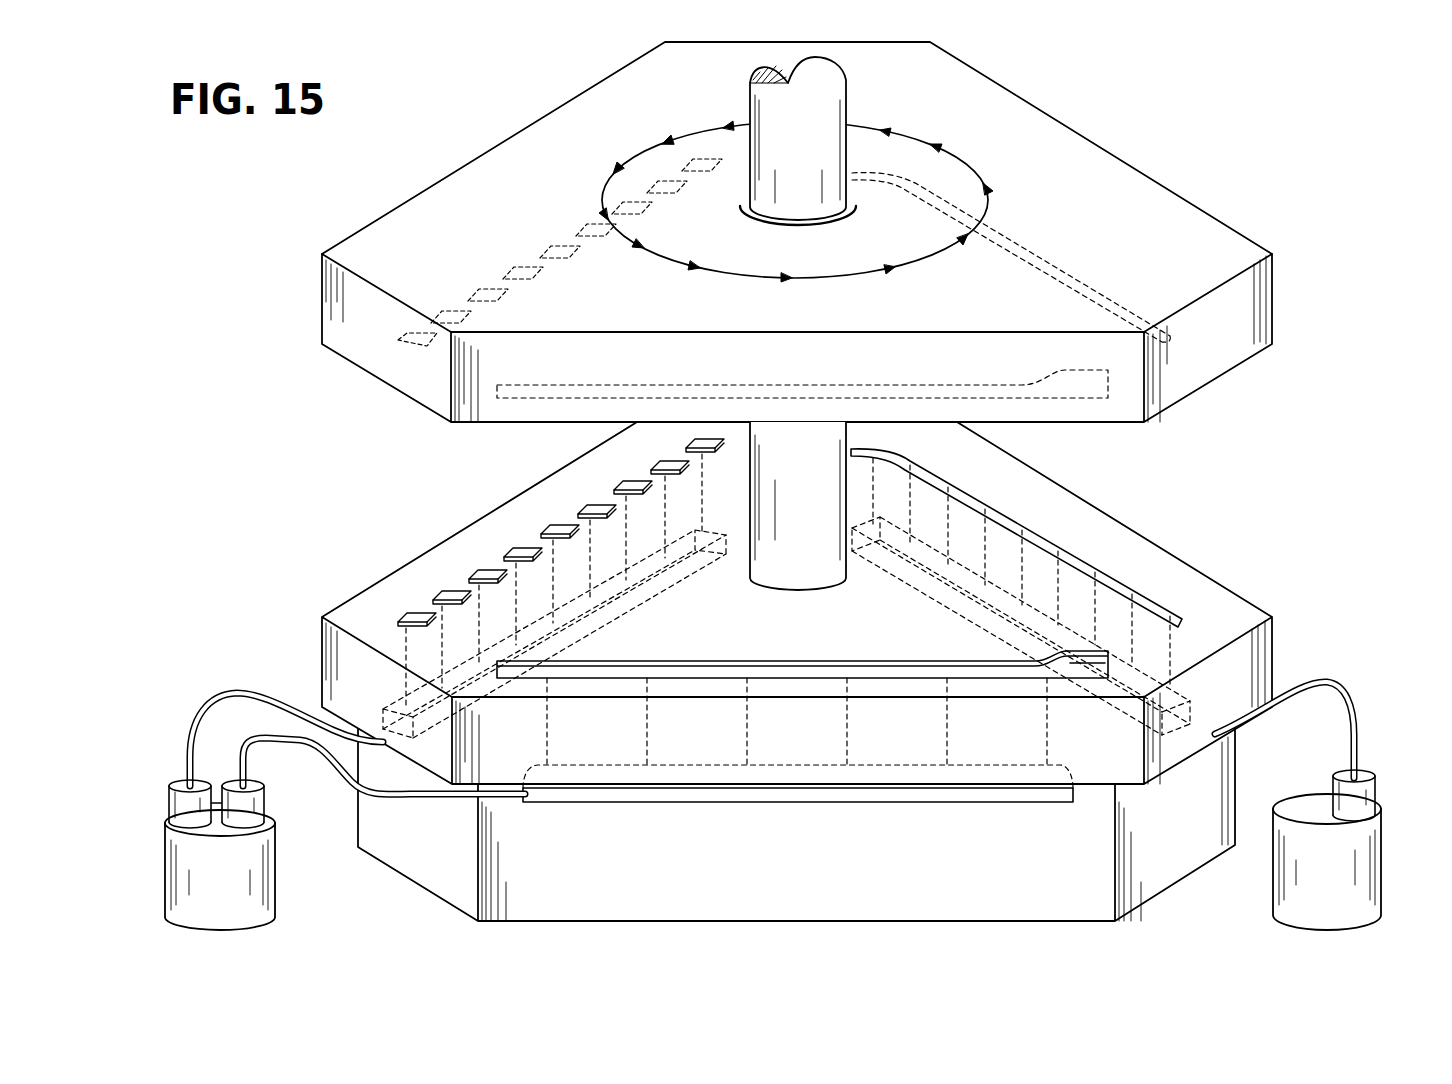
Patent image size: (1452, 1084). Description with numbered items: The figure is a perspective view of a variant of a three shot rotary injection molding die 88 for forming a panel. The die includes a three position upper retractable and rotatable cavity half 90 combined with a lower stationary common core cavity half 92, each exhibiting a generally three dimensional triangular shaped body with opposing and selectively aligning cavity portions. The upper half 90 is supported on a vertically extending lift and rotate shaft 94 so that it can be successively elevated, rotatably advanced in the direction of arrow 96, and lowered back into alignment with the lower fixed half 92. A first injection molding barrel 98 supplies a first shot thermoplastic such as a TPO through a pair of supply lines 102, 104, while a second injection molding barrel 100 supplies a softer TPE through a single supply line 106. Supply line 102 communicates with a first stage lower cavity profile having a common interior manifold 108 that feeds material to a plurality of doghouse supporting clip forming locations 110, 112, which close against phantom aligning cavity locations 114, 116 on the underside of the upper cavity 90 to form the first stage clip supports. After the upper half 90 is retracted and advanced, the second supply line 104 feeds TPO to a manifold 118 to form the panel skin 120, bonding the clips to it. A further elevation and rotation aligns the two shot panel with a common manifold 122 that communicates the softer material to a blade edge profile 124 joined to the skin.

The vapor deposition apparatus 88 is at (266, 319).
The upper retractable/rotatable cavity half 90 is at (430, 233).
The lower stationary cavity half 92 is at (802, 884).
The lift and rotate shaft 94 is at (810, 83).
The arrow 96 is at (915, 131).
The first injection molding barrel 98 is at (225, 931).
The second injection molding barrel 100 is at (1292, 880).
The supply line 102 is at (236, 691).
The second supply line 104 is at (325, 770).
The supply line 106 is at (1331, 684).
The common interior manifold 108 is at (393, 736).
The doghouse supporting clip forming location 110 is at (414, 613).
The doghouse supporting clip forming location 112 is at (452, 597).
The aligning cavity location 114 is at (418, 339).
The aligning cavity location 116 is at (460, 326).
The manifold 118 is at (705, 808).
The panel skin 120 is at (710, 668).
The common manifold 122 is at (1187, 705).
The blade edge profile 124 is at (1075, 556).